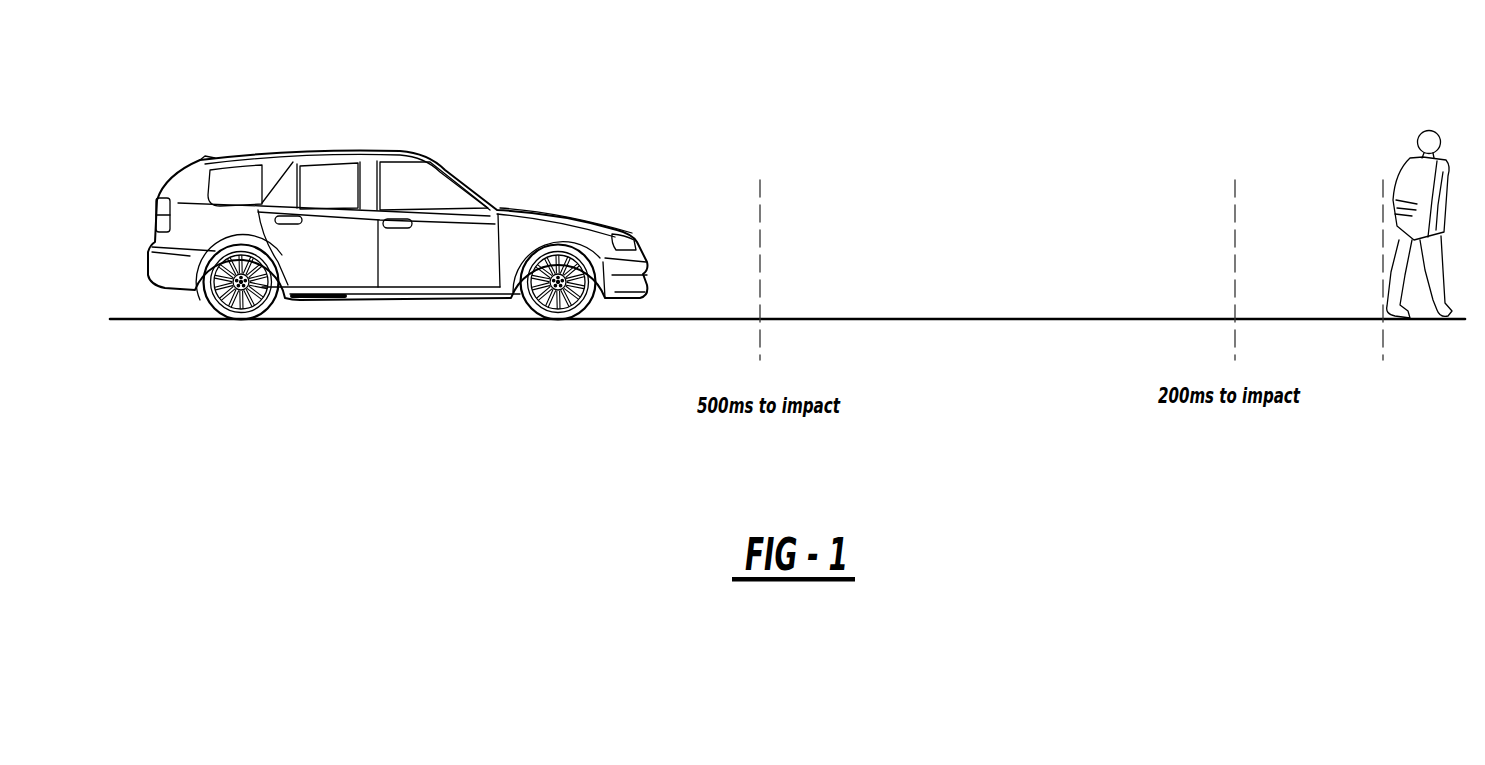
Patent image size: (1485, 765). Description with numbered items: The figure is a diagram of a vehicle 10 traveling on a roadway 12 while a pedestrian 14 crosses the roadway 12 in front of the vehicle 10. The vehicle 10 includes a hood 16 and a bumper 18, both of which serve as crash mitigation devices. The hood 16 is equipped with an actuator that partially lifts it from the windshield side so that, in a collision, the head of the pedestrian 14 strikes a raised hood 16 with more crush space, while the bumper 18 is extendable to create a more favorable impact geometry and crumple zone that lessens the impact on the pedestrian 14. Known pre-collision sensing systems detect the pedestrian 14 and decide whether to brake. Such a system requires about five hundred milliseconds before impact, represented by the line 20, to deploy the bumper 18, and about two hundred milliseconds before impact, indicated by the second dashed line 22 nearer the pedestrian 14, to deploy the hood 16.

The vehicle 10 is at (433, 187).
The roadway 12 is at (950, 317).
The pedestrian 14 is at (1406, 158).
The hood 16 is at (585, 213).
The bumper 18 is at (640, 283).
The line 20 is at (759, 237).
The 200 ms to impact threshold 22 is at (1234, 220).